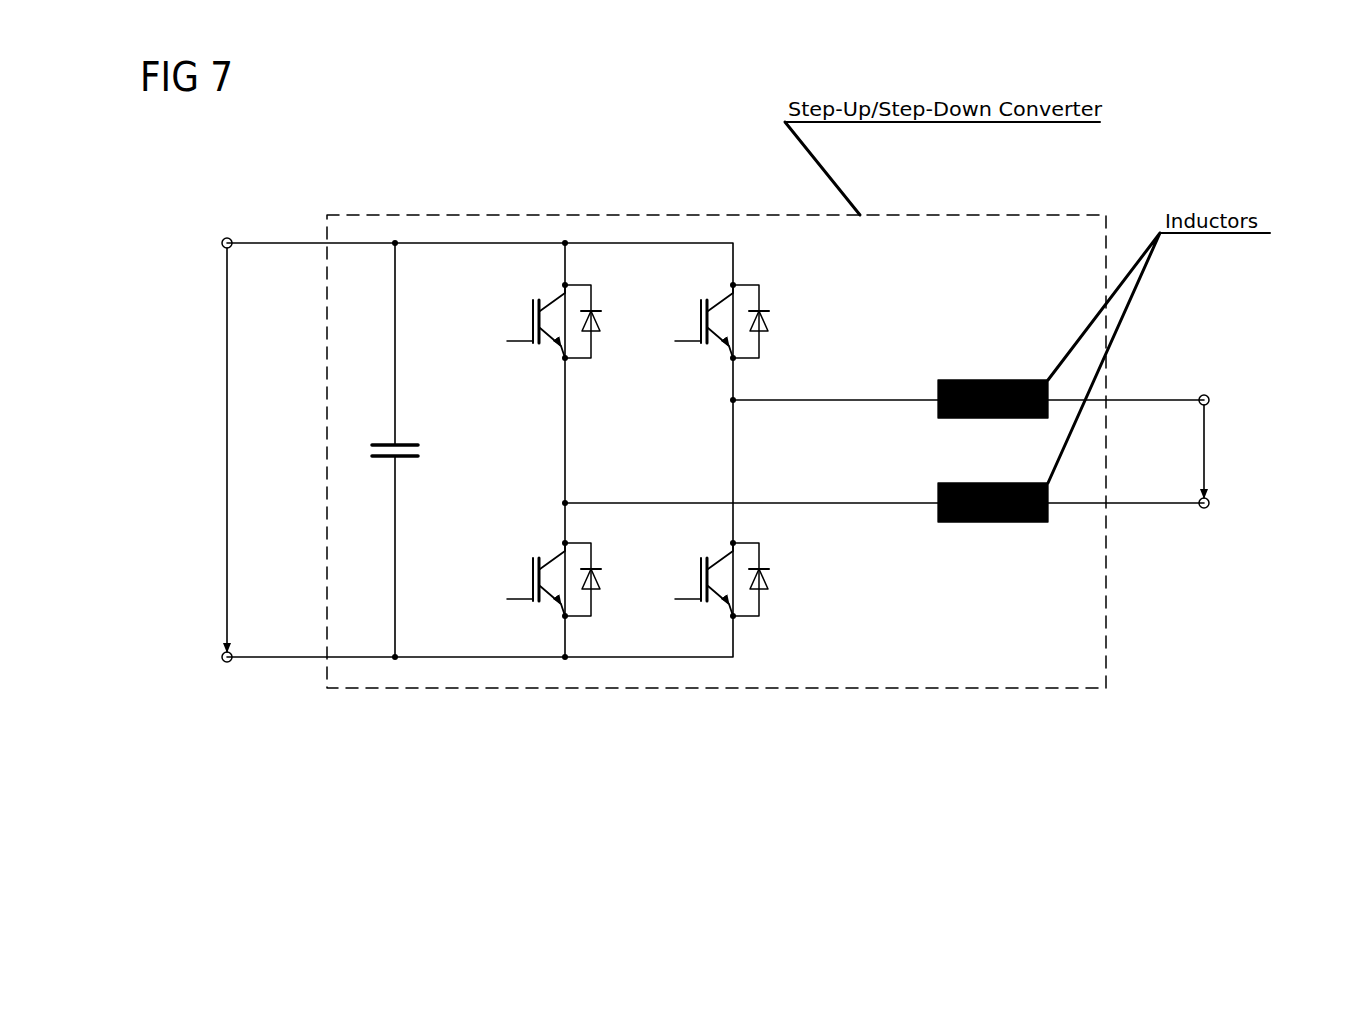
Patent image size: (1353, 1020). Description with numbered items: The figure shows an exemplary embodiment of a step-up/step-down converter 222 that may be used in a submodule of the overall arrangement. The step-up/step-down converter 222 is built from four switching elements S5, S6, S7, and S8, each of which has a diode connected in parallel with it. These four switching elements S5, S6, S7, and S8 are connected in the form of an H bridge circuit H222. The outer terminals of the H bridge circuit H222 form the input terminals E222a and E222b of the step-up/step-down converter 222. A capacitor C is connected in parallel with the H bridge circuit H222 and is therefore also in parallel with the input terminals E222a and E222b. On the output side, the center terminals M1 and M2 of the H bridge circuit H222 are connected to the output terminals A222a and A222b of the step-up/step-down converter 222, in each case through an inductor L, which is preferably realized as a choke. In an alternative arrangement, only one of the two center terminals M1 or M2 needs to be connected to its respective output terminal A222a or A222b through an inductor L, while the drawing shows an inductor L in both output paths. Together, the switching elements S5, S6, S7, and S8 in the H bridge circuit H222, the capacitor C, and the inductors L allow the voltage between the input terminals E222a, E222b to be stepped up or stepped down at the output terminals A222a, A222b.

The step-up/step-down converter 222 is at (708, 214).
The input terminal E222a is at (222, 243).
The input terminal E222b is at (222, 657).
The output terminal A222a is at (1209, 400).
The output terminal A222b is at (1209, 503).
The capacitor C is at (408, 450).
The inductor L is at (996, 379).
The switching element S5 is at (551, 321).
The switching element S6 is at (551, 579).
The switching element S7 is at (718, 321).
The switching element S8 is at (718, 579).
The H bridge circuit H222 is at (605, 460).
The center terminal M1 is at (732, 400).
The center terminal M2 is at (567, 501).